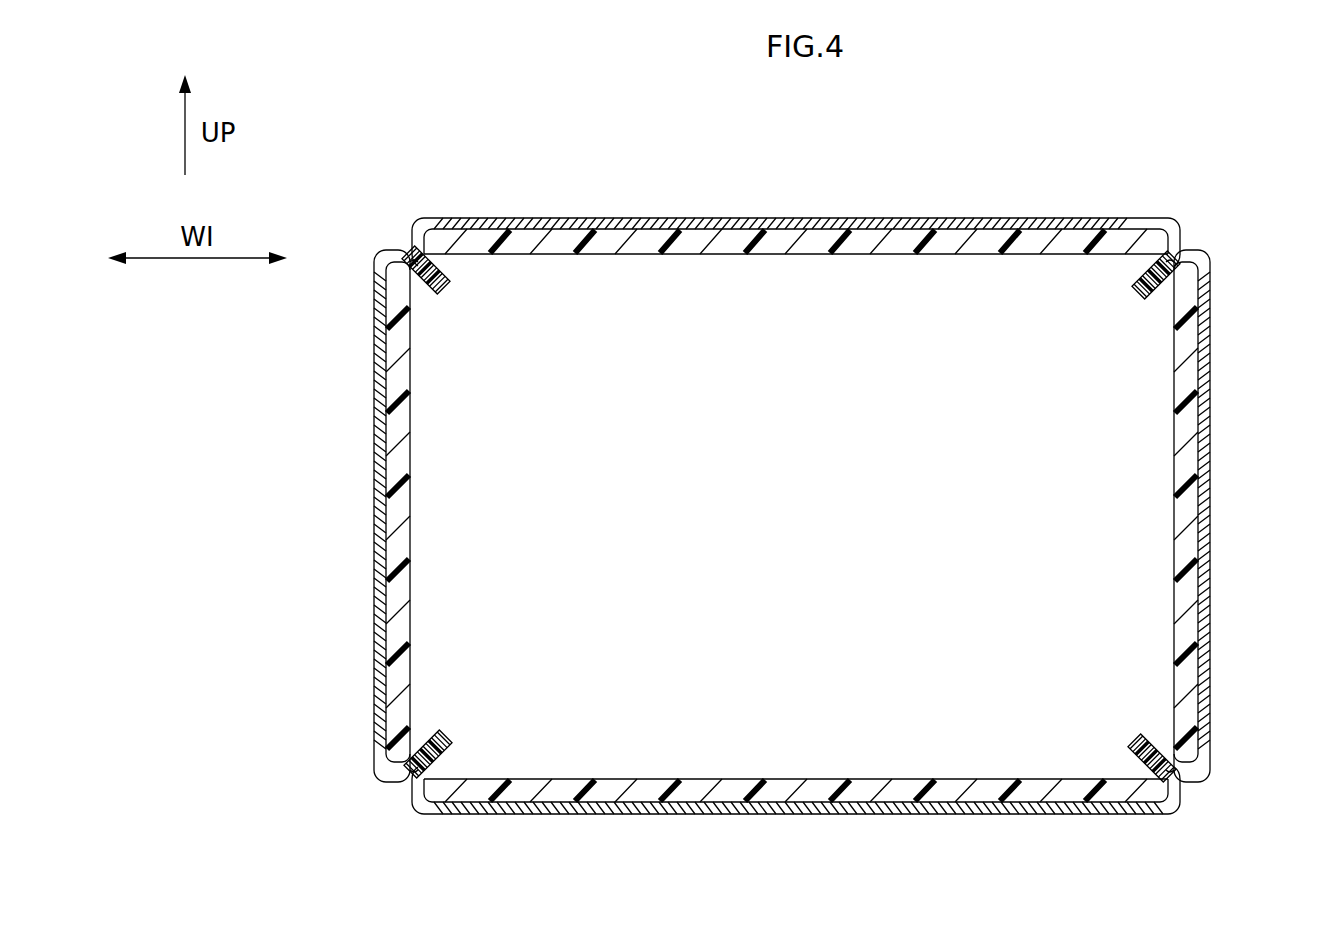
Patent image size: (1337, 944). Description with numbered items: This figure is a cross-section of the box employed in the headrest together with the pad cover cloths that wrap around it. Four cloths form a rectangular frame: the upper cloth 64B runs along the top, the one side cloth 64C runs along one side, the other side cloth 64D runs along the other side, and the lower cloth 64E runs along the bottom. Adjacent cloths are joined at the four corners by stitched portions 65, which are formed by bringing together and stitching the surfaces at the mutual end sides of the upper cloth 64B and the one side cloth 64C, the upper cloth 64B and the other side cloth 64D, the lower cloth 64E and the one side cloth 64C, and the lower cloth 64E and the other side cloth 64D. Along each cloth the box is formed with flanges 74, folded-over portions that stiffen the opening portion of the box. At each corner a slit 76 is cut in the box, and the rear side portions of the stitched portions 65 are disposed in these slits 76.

The upper cloth 64B is at (848, 218).
The one side cloth 64C is at (374, 498).
The other side cloth 64D is at (1212, 498).
The lower cloth 64E is at (790, 815).
The flange 74 is at (764, 256).
The stitched portion 65 is at (432, 292).
The slit 76 is at (411, 247).